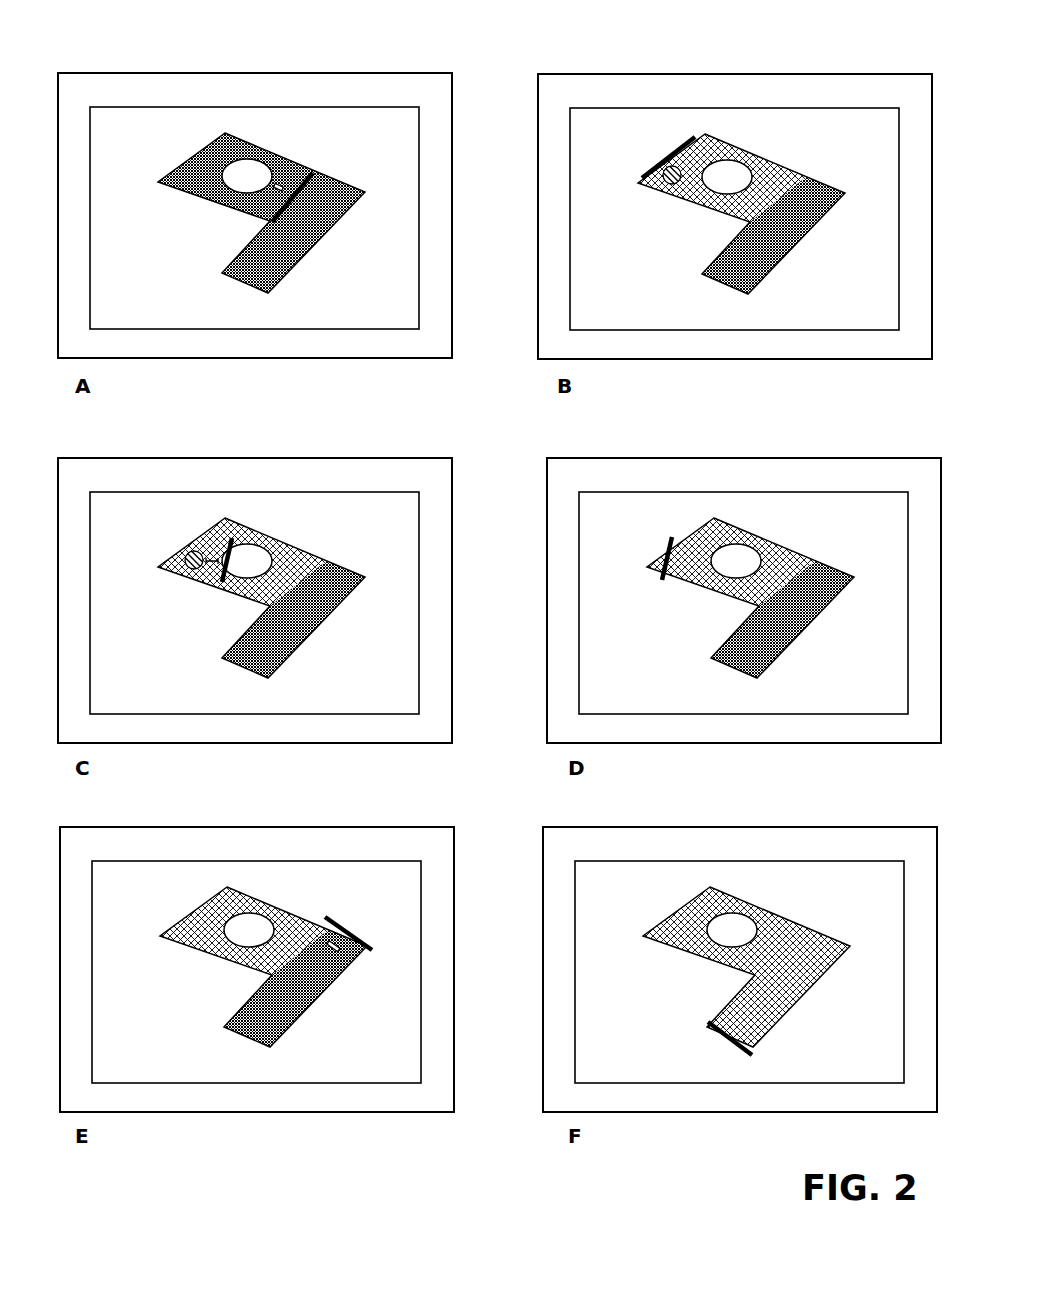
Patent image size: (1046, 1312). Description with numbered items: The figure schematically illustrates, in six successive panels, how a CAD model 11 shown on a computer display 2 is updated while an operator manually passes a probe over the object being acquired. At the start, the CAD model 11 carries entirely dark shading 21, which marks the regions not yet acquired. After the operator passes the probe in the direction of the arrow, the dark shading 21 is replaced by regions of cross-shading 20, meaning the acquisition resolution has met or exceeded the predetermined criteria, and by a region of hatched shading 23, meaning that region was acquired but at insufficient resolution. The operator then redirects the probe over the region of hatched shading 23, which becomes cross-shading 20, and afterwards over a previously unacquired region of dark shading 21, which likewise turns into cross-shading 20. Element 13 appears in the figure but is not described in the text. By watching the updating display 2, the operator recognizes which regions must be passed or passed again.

The computer display 2 is at (333, 73).
The CAD model 11 is at (185, 228).
The attachment bar / connector 13 is at (305, 197).
The cross-shading 20 is at (695, 138).
The dark shading 21 is at (297, 264).
The hatched shading 23 is at (661, 185).